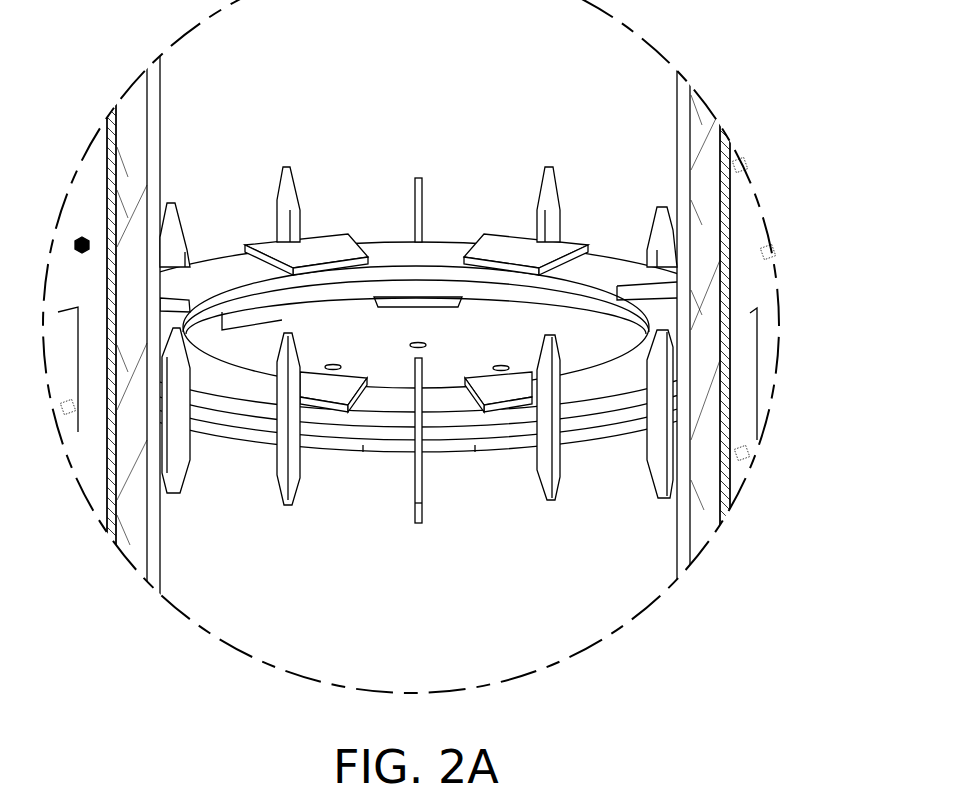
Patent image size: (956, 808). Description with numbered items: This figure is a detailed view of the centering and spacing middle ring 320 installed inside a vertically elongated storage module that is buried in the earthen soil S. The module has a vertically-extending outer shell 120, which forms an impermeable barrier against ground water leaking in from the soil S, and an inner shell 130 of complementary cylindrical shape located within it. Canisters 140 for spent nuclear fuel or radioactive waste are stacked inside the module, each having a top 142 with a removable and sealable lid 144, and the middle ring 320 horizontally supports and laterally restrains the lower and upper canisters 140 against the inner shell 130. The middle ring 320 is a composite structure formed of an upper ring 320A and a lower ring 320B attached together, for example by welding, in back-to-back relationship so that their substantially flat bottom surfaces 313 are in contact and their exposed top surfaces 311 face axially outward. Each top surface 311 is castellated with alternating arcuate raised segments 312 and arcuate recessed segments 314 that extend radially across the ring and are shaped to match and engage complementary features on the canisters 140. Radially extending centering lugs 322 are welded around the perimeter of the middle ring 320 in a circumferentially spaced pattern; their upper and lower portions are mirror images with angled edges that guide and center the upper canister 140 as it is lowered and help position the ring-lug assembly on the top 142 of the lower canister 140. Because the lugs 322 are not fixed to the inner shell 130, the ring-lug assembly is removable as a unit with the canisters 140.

The outer shell 120 is at (107, 428).
The inner shell 130 is at (683, 127).
The canister 140 is at (592, 614).
The top 142 is at (250, 437).
The lid 144 is at (523, 325).
The top surface 311 is at (218, 262).
The arcuate raised segment 312 is at (327, 250).
The bottom surface 313 is at (497, 437).
The arcuate recessed segment 314 is at (380, 257).
The centering and spacing middle ring 320 is at (416, 314).
The upper ring 320A is at (337, 415).
The lower ring 320B is at (392, 437).
The centering lug 322 is at (283, 175).
The earthen soil S is at (750, 313).